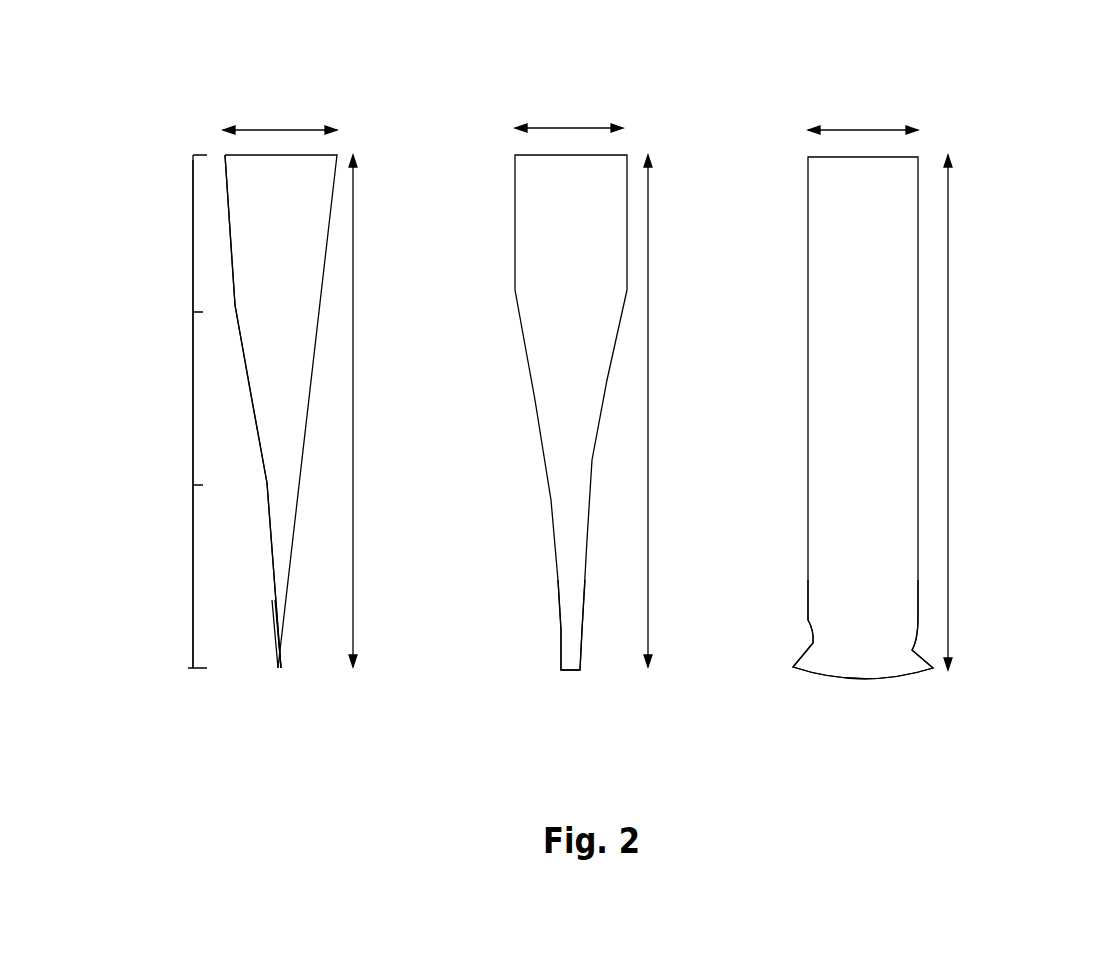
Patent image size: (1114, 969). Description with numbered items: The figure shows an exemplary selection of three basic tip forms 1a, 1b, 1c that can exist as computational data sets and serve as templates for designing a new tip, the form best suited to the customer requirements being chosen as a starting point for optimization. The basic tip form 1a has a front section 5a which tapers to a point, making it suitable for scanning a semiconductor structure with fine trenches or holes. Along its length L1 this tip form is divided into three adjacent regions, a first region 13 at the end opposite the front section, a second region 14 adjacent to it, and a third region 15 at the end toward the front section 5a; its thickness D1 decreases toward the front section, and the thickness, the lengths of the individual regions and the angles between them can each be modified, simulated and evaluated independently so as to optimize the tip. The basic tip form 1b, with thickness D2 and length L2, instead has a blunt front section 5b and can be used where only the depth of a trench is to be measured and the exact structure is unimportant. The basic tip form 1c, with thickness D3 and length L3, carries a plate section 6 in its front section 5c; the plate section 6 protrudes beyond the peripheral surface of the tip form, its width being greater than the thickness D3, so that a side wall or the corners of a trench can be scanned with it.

The basic tip form 1a is at (158, 158).
The basic tip form 1b is at (457, 157).
The basic tip form 1c is at (747, 158).
The first region 13 is at (193, 233).
The second region 14 is at (193, 398).
The third region 15 is at (193, 578).
The front section 5a is at (279, 637).
The blunt front section 5b is at (561, 630).
The front section 5c is at (807, 620).
The plate section 6 is at (793, 668).
The thickness D1 is at (270, 130).
The thickness D2 is at (568, 128).
The thickness D3 is at (860, 130).
The length L1 is at (353, 383).
The length L2 is at (648, 410).
The length L3 is at (948, 417).